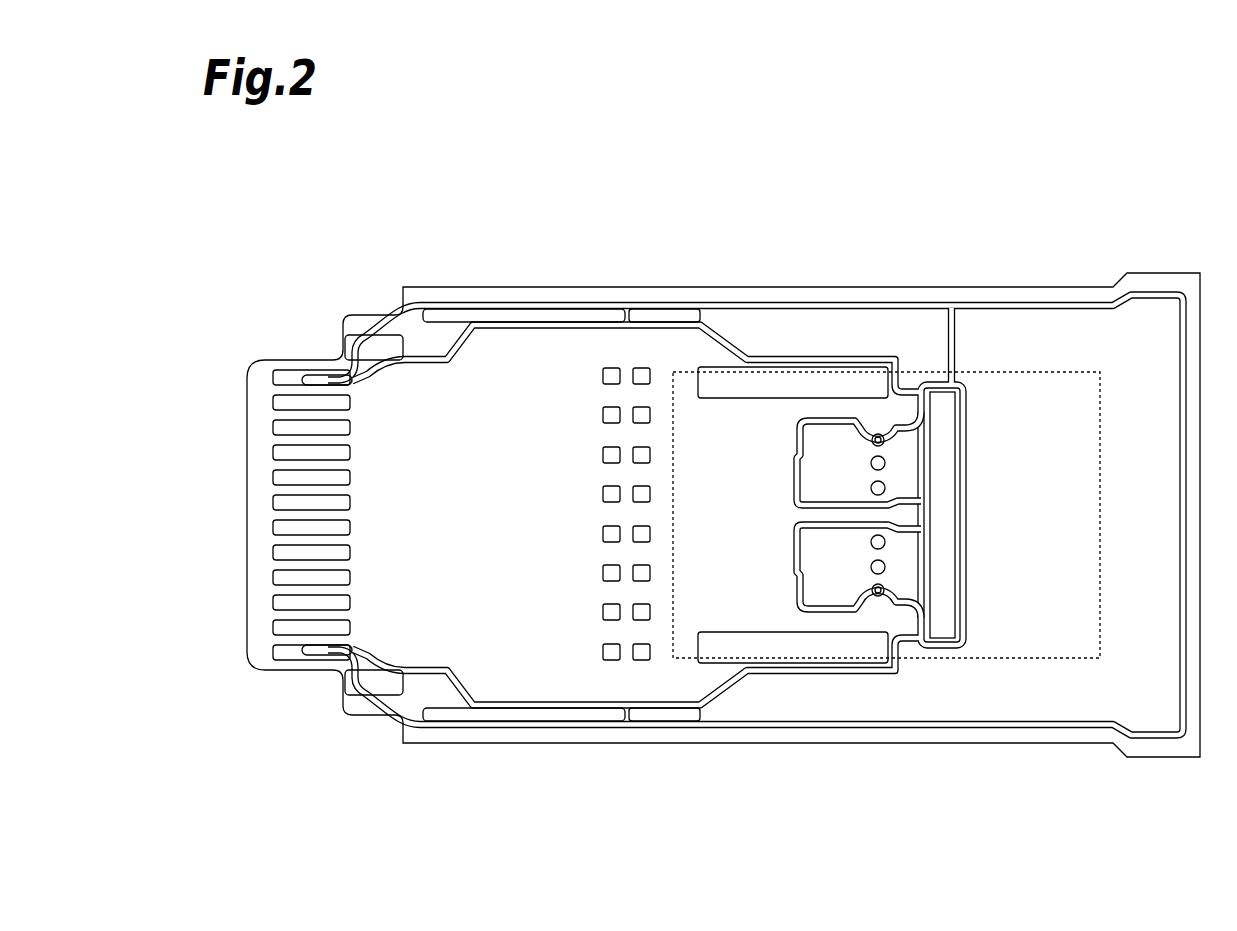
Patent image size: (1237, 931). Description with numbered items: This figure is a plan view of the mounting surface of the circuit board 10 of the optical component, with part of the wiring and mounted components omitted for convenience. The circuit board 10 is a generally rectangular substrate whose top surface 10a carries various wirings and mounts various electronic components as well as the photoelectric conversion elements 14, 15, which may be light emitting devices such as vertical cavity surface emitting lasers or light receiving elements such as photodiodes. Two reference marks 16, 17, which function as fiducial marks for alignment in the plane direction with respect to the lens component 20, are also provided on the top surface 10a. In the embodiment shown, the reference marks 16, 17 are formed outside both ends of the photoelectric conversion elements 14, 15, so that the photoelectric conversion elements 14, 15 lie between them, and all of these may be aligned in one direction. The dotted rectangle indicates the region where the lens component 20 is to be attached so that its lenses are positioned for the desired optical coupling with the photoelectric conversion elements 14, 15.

The circuit board 10 is at (1118, 190).
The top surface 10a is at (918, 693).
The photoelectric conversion element 14 is at (868, 572).
The photoelectric conversion element 15 is at (868, 467).
The reference mark 16 is at (882, 600).
The reference mark 17 is at (878, 434).
The lens component 20 is at (1020, 662).